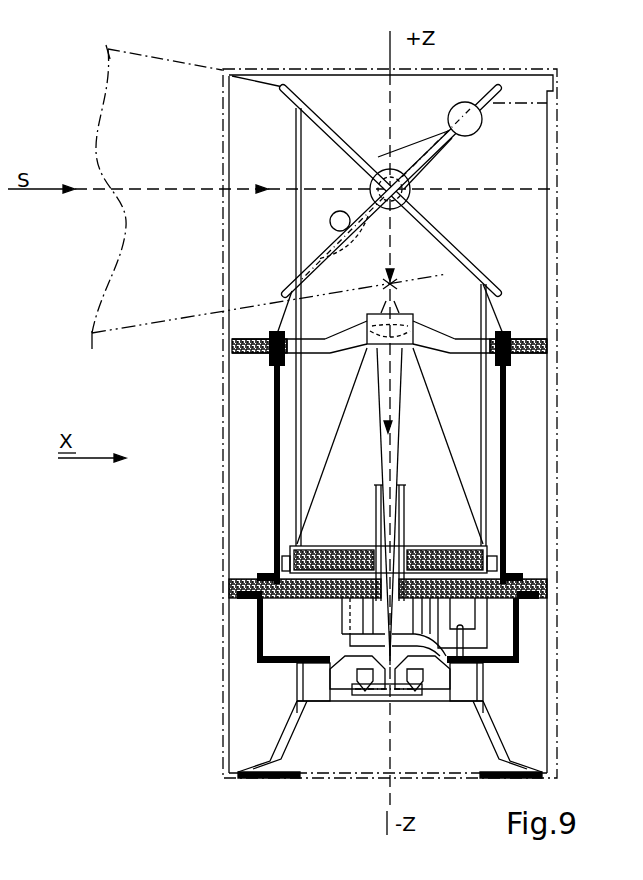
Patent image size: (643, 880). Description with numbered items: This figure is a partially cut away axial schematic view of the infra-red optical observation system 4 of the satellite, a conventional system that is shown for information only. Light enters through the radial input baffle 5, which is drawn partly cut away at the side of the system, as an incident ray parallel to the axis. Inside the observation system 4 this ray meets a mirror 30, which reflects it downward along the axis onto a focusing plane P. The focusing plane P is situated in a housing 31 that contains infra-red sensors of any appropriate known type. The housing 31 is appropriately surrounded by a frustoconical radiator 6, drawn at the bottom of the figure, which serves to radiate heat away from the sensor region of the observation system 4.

The infra-red optical observation system 4 is at (210, 587).
The radial input baffle 5 is at (167, 324).
The radiator 6 is at (297, 748).
The mirror 30 is at (453, 232).
The housing 31 is at (365, 695).
The focusing plane P is at (410, 693).